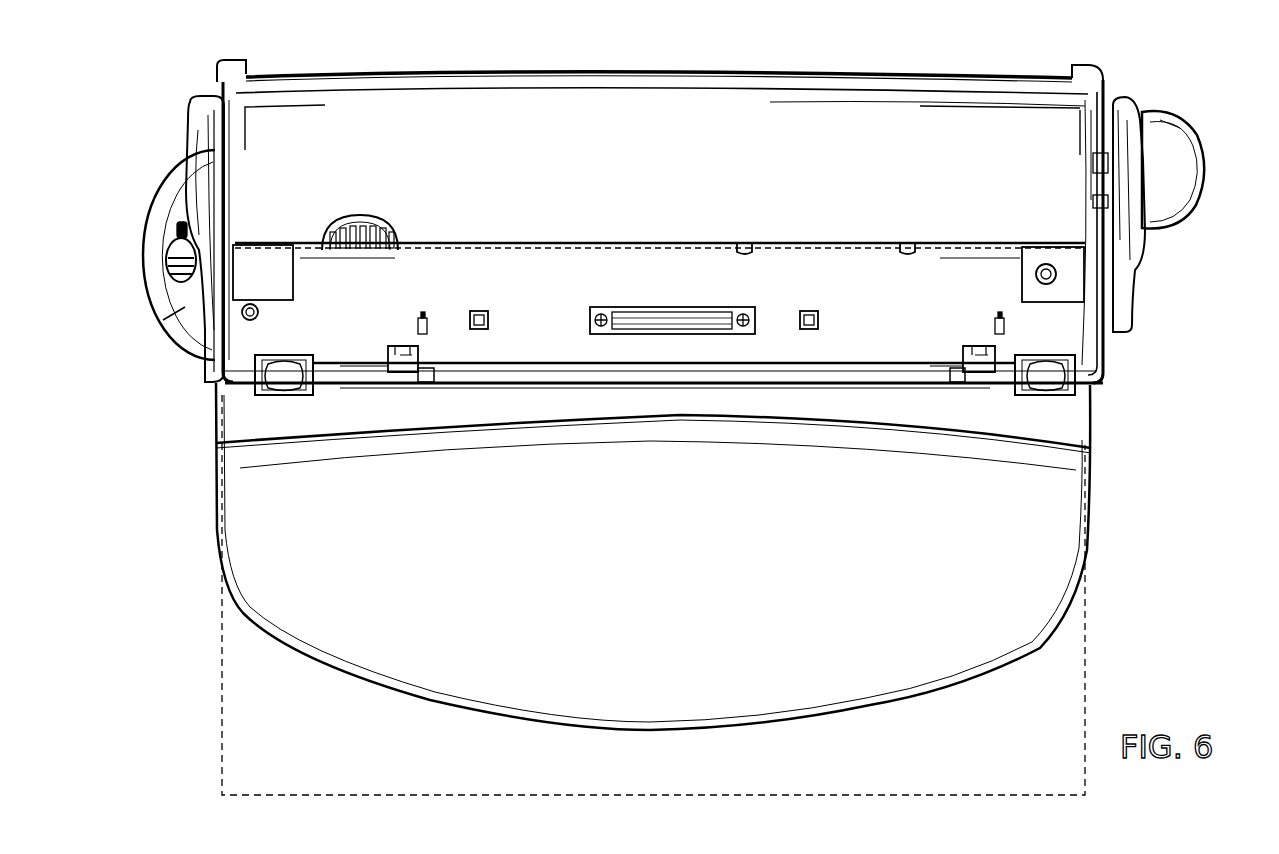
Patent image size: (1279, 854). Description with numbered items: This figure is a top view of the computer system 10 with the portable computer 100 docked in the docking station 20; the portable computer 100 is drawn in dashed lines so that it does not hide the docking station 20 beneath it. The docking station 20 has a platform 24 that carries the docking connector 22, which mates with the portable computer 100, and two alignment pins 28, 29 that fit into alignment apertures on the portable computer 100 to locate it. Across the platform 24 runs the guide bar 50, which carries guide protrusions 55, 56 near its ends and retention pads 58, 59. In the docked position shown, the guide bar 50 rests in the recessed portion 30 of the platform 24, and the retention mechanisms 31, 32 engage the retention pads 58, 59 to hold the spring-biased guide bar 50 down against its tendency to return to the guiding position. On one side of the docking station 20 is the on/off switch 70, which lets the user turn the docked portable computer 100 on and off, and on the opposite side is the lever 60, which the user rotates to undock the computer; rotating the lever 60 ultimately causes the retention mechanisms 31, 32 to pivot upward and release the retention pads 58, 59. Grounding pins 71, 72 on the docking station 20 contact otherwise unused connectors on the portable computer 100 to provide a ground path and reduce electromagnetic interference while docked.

The computer system 10 is at (205, 52).
The docking station 20 is at (1085, 65).
The docking connector 22 is at (673, 306).
The platform 24 is at (657, 557).
The alignment pin 28 is at (262, 312).
The alignment pin 29 is at (1034, 276).
The recessed portion 30 is at (525, 392).
The retention mechanism 31 is at (413, 352).
The retention mechanism 32 is at (968, 350).
The guide bar 50 is at (360, 385).
The guide protrusion 55 is at (265, 392).
The guide protrusion 56 is at (1066, 395).
The retention pad 58 is at (418, 382).
The retention pad 59 is at (960, 384).
The lever 60 is at (1190, 150).
The on/off switch 70 is at (170, 243).
The grounding pin 71 is at (745, 257).
The grounding pin 72 is at (908, 256).
The portable computer 100 is at (1078, 712).